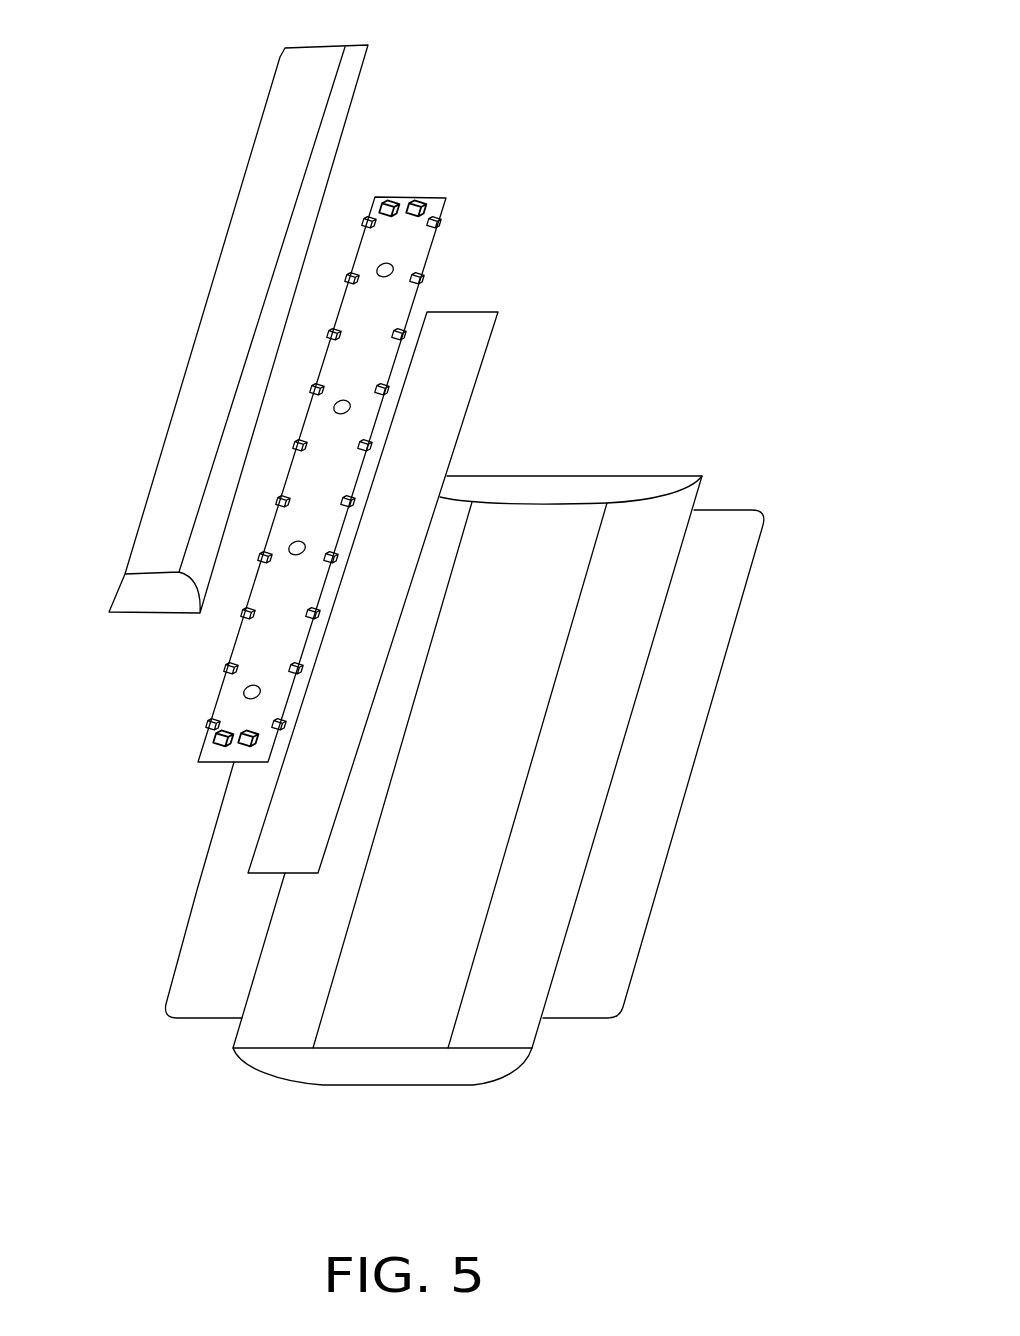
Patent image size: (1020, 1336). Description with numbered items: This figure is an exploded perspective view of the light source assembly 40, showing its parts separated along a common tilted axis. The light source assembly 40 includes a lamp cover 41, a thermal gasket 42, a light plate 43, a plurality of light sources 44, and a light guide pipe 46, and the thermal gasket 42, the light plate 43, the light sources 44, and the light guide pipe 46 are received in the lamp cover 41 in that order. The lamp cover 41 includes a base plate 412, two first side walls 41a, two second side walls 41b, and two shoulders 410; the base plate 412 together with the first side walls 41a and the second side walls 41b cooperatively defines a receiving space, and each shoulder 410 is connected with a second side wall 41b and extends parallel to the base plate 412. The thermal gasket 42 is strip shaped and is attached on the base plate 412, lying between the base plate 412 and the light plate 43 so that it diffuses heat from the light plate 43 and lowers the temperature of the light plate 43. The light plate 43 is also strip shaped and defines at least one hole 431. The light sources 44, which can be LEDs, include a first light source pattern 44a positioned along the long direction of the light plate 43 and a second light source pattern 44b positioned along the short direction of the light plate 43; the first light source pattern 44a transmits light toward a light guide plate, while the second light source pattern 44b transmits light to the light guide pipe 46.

The light source assembly 40 is at (631, 137).
The lamp cover 41 is at (203, 957).
The first side wall 41a is at (375, 1072).
The second side wall 41b is at (577, 773).
The shoulder 410 is at (628, 892).
The base plate 412 is at (433, 930).
The thermal gasket 42 is at (297, 835).
The light plate 43 is at (230, 708).
The hole 431 is at (350, 405).
The light source 44 is at (512, 128).
The first light source pattern 44a is at (405, 337).
The second light source pattern 44b is at (415, 200).
The light guide pipe 46 is at (257, 210).